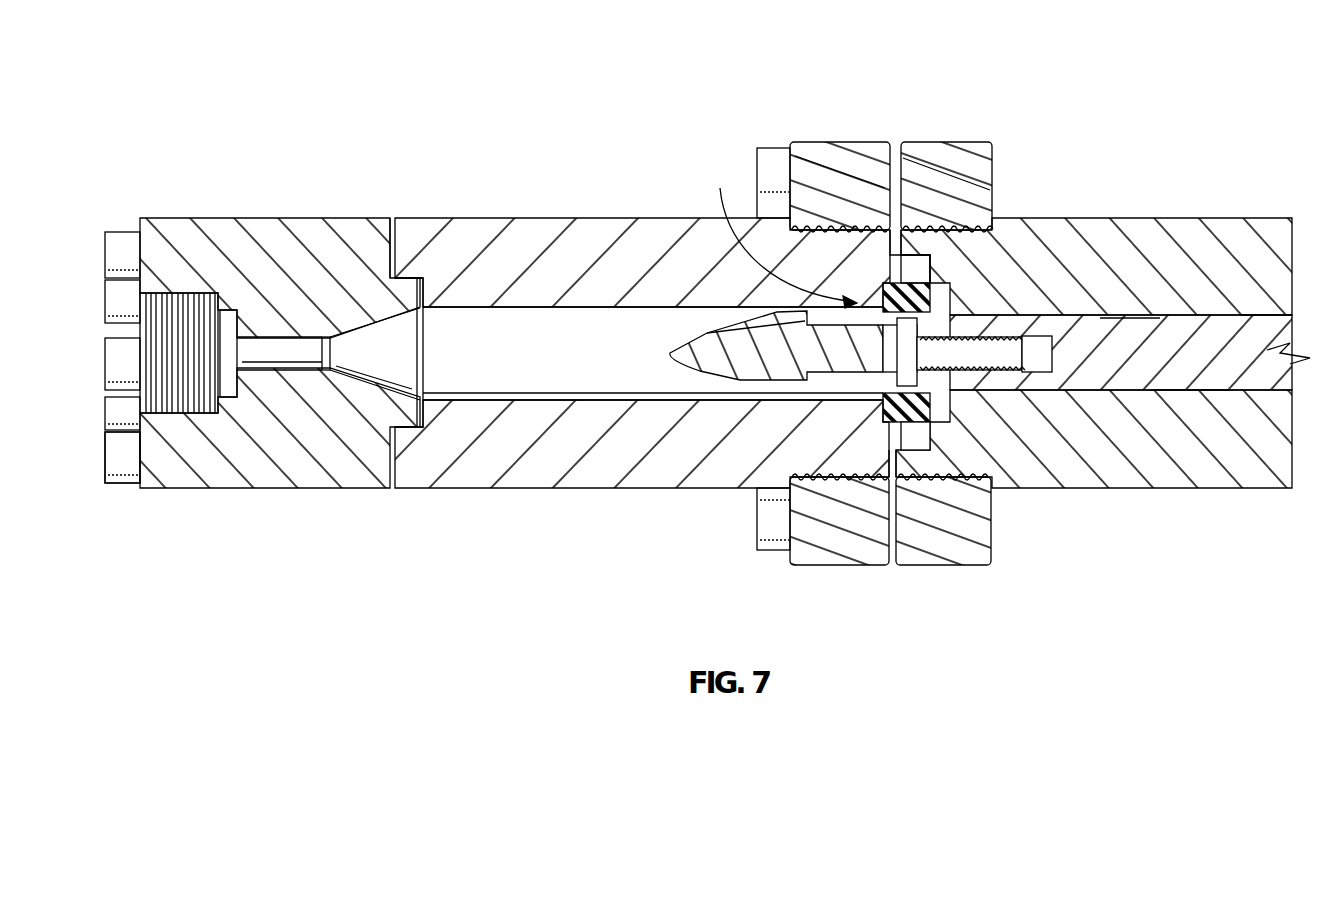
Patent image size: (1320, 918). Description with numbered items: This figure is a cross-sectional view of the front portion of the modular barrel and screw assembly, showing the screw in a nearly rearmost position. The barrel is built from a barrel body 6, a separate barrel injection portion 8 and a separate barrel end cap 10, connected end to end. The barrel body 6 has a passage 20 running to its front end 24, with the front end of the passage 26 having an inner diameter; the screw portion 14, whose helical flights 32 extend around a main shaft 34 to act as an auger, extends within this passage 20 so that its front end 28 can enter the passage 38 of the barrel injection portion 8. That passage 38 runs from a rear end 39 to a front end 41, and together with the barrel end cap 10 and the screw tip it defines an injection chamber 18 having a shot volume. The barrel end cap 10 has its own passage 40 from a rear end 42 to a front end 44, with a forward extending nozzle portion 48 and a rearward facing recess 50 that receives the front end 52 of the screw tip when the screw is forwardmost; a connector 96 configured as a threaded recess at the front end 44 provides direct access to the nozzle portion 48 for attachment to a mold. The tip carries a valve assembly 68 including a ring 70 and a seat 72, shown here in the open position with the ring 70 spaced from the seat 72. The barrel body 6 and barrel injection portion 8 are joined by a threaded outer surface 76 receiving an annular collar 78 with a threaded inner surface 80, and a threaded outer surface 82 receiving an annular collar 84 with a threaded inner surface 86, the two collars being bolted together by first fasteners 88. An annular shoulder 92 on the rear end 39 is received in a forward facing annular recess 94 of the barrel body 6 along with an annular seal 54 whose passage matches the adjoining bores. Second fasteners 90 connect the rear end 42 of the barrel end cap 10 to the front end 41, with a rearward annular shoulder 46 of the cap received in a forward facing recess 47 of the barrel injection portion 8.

The barrel body 6 is at (1110, 470).
The barrel injection portion 8 is at (601, 470).
The barrel end cap 10 is at (292, 466).
The screw portion 14 is at (1187, 392).
The injection chamber 18 is at (463, 328).
The passage 20 is at (1131, 313).
The front end 24 is at (908, 440).
The front end of the passage 26 is at (928, 275).
The front end 28 is at (935, 432).
The flights 32 is at (1272, 300).
The main shaft 34 is at (1152, 350).
The passage 38 is at (542, 310).
The rear end 39 is at (895, 245).
The passage 40 is at (327, 335).
The front end 41 is at (368, 295).
The rear end 42 is at (438, 285).
The front end 44 is at (135, 445).
The rearward annular shoulder 46 is at (431, 437).
The forward facing recess 47 is at (400, 426).
The nozzle portion 48 is at (266, 338).
The rearward facing recess 50 is at (361, 325).
The front end 52 is at (702, 348).
The annular seal 54 is at (906, 435).
The valve assembly 68 is at (781, 231).
The ring 70 is at (803, 400).
The seat 72 is at (833, 392).
The outer surface 76 is at (963, 236).
The annular collar 78 is at (939, 242).
The threaded inner surface 80 is at (920, 246).
The outer surface 82 is at (804, 232).
The annular collar 84 is at (838, 232).
The threaded inner surface 86 is at (828, 240).
The first fasteners 88 is at (772, 190).
The second fasteners 90 is at (120, 245).
The annular shoulder 92 is at (920, 268).
The forward facing annular recess 94 is at (885, 422).
The connector 96 is at (165, 413).